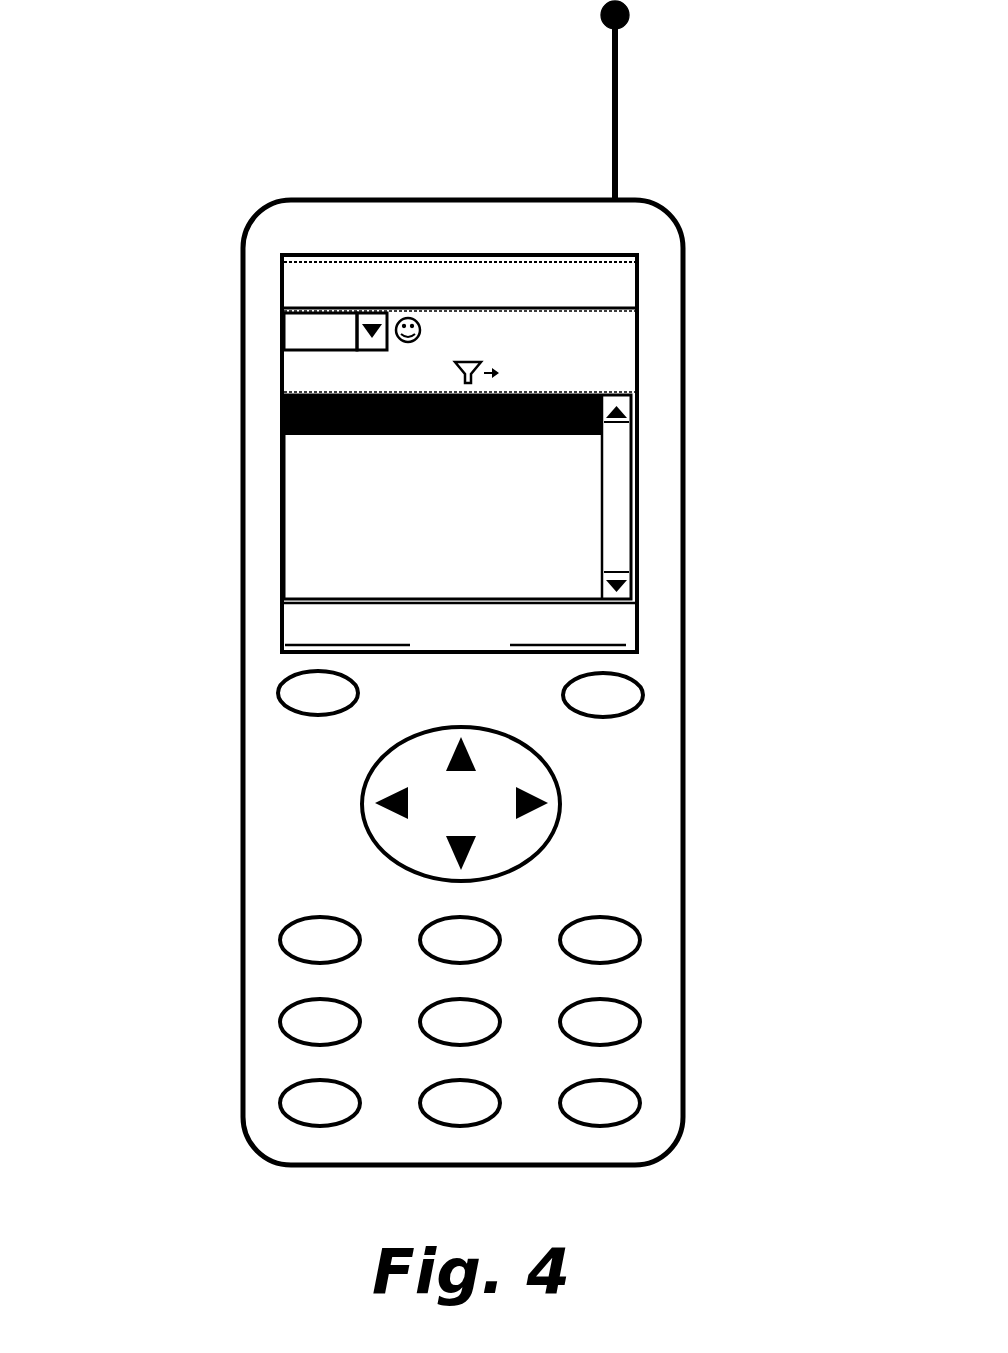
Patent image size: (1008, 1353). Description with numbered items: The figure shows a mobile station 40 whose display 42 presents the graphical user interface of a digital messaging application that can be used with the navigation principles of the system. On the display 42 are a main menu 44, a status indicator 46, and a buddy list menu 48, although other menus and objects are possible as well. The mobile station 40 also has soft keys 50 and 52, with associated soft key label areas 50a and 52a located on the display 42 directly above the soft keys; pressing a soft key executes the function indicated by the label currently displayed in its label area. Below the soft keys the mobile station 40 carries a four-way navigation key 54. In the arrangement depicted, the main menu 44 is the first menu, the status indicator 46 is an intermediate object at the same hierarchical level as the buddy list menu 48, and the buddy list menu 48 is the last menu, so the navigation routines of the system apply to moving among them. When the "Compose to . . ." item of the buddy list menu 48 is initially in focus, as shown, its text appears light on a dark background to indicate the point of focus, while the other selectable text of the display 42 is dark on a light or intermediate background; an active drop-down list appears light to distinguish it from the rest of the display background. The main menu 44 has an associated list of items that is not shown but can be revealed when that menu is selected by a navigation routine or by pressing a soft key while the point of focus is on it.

The mobile station 40 is at (686, 178).
The display 42 is at (326, 250).
The main menu 44 is at (279, 326).
The status indicator 46 is at (630, 326).
The buddy list menu 48 is at (274, 367).
The soft key 50 is at (273, 690).
The soft key label area 50a is at (278, 618).
The soft key 52 is at (648, 688).
The soft key label area 52a is at (628, 620).
The four-way navigation key 54 is at (576, 786).